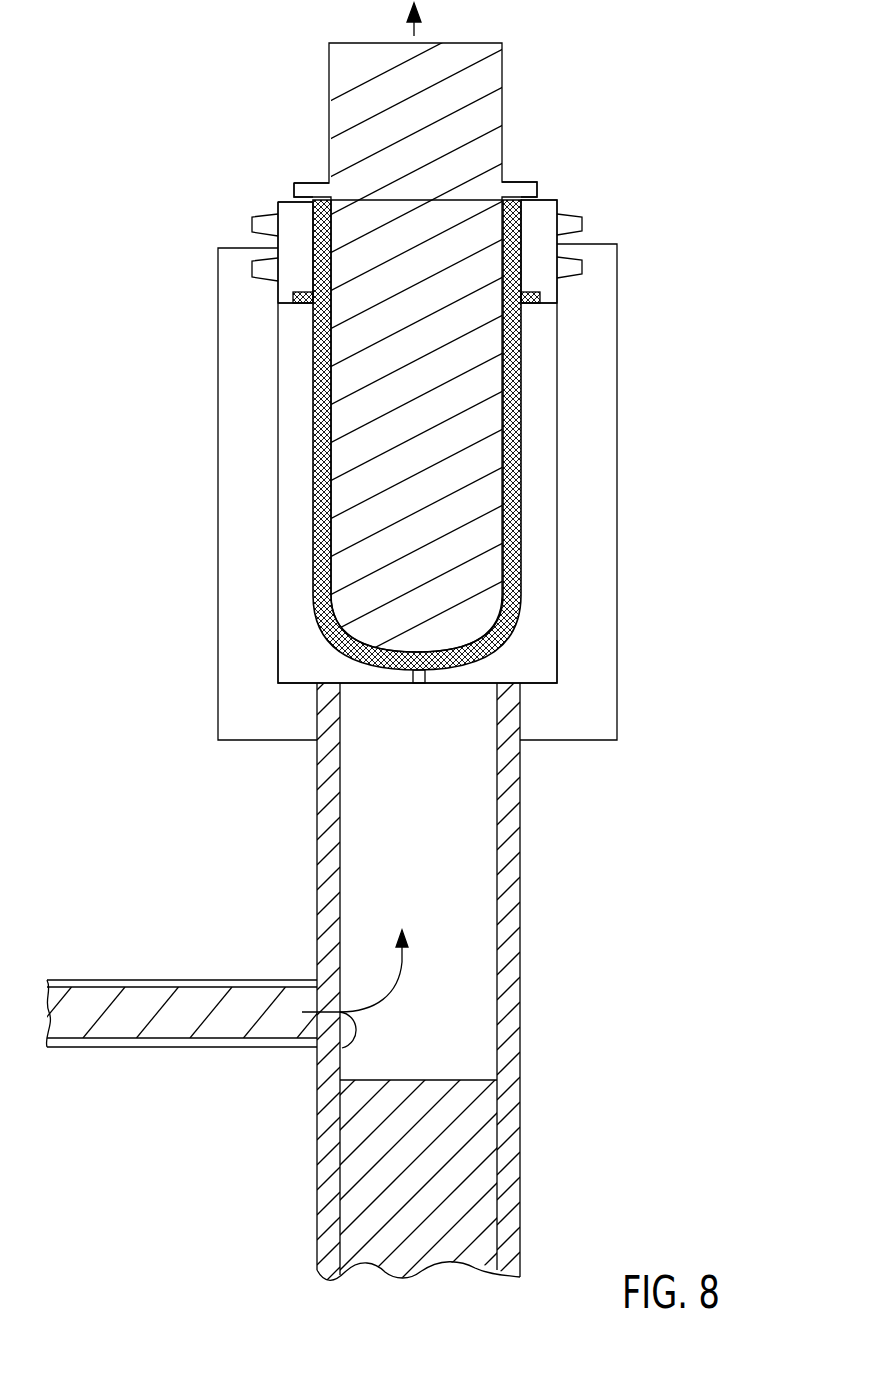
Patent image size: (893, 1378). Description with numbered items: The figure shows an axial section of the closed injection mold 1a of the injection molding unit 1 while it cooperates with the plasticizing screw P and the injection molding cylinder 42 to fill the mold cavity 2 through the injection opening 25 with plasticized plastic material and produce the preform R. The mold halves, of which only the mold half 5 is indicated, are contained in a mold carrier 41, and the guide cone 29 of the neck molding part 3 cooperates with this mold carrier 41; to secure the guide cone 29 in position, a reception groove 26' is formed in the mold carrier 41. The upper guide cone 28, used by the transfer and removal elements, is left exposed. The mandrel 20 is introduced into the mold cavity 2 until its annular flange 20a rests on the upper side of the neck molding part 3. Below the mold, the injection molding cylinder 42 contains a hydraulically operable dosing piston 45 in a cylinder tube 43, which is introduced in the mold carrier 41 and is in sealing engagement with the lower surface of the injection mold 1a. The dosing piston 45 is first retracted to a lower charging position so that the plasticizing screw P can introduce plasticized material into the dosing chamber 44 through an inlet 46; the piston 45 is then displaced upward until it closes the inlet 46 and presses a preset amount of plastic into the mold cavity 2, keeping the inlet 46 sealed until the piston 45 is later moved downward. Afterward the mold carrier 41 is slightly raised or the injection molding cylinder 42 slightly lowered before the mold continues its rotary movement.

The injection molding unit 1 is at (706, 120).
The injection mold 1a is at (542, 637).
The mold cavity 2 is at (523, 420).
The neck molding part 3 is at (543, 208).
The mold half 5 is at (540, 483).
The mandrel 20 is at (487, 75).
The annular flange 20a is at (509, 189).
The injection opening 25 is at (420, 684).
The reception groove 26' is at (346, 314).
The upper guide cone 28 is at (577, 208).
The guide cone 29 is at (252, 268).
The mold carrier 41 is at (593, 538).
The injection molding cylinder 42 is at (546, 868).
The cylinder tube 43 is at (510, 973).
The dosing chamber 44 is at (478, 918).
The dosing piston 45 is at (485, 1097).
The inlet 46 is at (342, 1048).
The plasticizing screw P is at (180, 1048).
The preform R is at (313, 505).